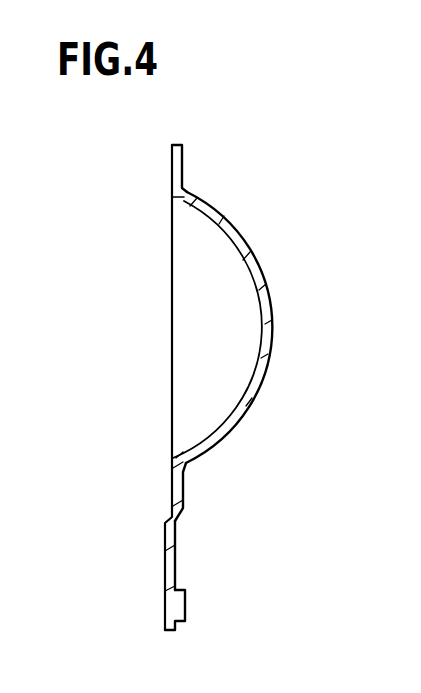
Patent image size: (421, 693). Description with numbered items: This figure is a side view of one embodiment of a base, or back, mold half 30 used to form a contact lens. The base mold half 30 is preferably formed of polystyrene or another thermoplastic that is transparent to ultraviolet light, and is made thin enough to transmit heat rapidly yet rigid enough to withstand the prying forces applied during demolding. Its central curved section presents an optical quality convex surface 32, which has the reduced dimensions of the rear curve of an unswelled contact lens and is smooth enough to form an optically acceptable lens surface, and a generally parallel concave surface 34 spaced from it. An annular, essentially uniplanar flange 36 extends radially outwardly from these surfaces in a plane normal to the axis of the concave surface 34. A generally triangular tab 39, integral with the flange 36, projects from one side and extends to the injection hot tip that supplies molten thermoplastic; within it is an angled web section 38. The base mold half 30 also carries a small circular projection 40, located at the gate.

The base mold half 30 is at (152, 262).
The convex surface 32 is at (268, 293).
The concave surface 34 is at (258, 350).
The flange 36 is at (183, 162).
The web section 38 is at (185, 519).
The tab 39 is at (163, 540).
The circular projection 40 is at (165, 605).